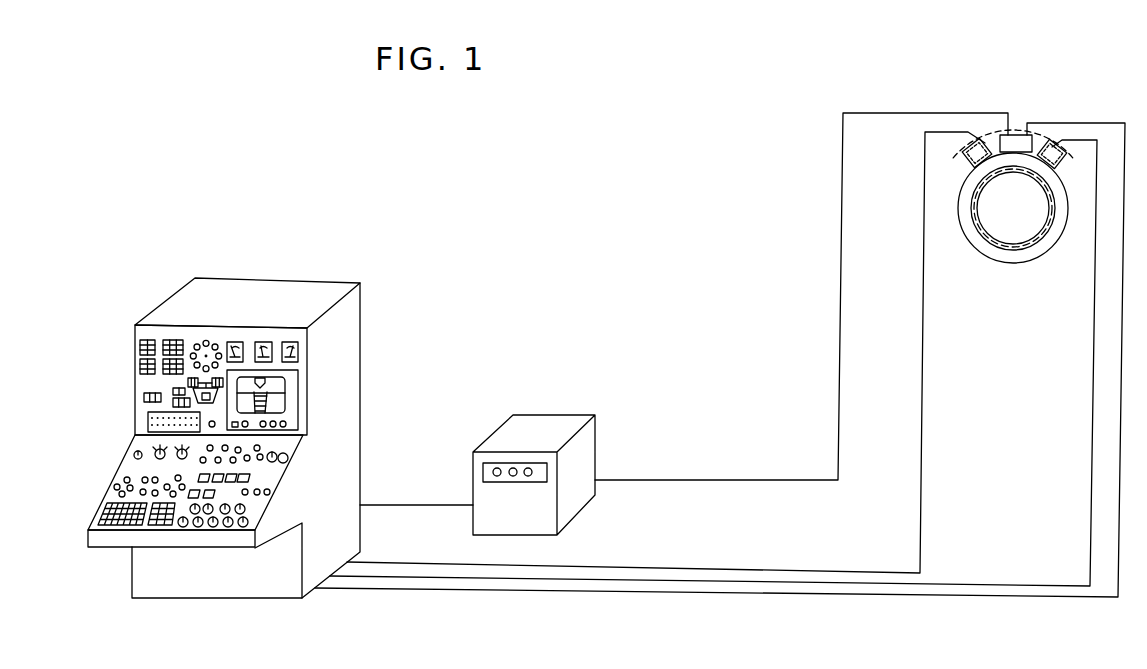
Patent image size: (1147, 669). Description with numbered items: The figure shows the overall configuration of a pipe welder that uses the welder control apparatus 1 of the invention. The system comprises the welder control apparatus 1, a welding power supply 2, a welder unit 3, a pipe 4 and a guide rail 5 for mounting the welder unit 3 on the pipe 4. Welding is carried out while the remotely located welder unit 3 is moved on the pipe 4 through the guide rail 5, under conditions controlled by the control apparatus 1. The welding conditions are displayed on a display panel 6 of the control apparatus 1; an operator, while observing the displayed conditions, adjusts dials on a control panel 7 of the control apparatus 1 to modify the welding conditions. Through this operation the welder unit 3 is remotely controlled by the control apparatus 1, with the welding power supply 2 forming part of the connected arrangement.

The welder control apparatus 1 is at (282, 282).
The welding power supply 2 is at (545, 415).
The welder unit 3 is at (1015, 133).
The pipe 4 is at (1012, 250).
The guide rail 5 is at (1060, 219).
The display panel 6 is at (142, 385).
The control panel 7 is at (110, 488).